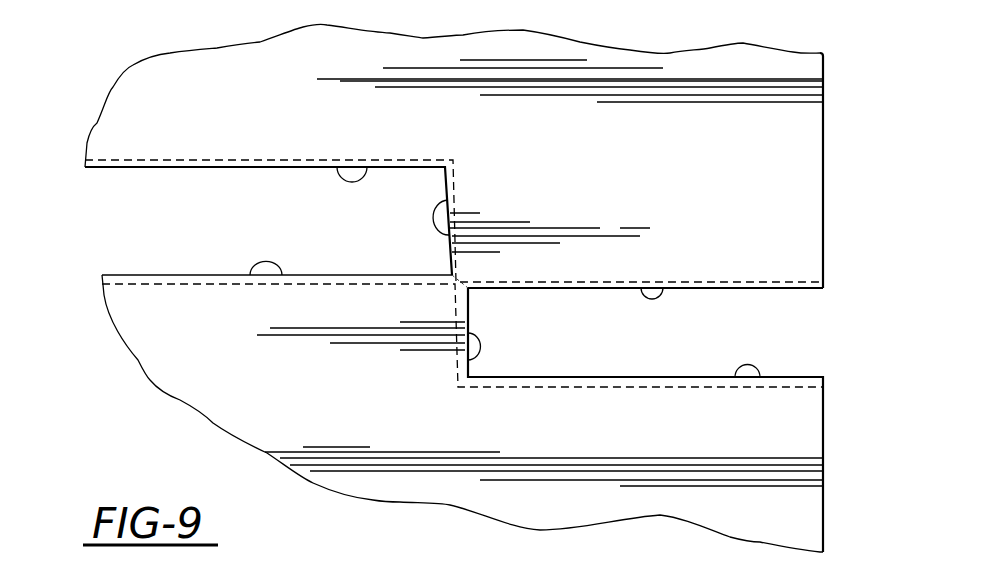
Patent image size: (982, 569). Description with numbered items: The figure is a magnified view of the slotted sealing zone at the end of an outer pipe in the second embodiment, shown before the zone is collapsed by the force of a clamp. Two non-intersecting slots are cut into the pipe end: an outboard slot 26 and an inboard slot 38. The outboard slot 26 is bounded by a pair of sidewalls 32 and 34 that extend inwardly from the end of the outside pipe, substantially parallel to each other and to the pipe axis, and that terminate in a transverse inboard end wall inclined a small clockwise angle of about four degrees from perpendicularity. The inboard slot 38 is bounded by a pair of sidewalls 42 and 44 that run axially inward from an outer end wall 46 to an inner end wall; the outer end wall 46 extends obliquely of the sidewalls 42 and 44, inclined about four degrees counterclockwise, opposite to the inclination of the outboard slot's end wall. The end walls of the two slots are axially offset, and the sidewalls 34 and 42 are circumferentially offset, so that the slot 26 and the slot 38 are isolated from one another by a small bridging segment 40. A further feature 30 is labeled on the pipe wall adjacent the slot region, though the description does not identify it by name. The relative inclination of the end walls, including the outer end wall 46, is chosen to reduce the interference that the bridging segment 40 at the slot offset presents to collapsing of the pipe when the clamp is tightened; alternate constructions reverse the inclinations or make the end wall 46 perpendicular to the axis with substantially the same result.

The outboard slot 26 is at (767, 349).
The protuberance on lower member 30 is at (468, 347).
The sidewall 32 is at (736, 377).
The sidewall 34 is at (660, 296).
The inboard slot 38 is at (180, 204).
The bridging segment 40 is at (465, 278).
The sidewall 42 is at (252, 274).
The sidewall 44 is at (365, 167).
The outer end wall 46 is at (450, 199).